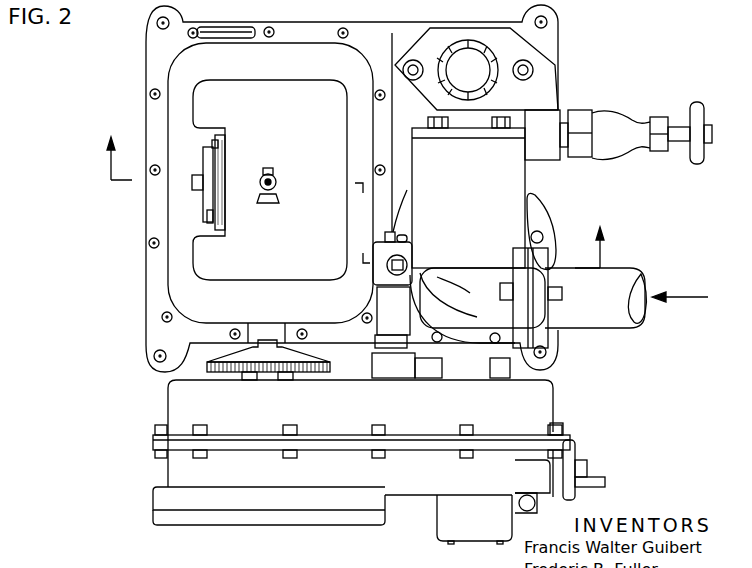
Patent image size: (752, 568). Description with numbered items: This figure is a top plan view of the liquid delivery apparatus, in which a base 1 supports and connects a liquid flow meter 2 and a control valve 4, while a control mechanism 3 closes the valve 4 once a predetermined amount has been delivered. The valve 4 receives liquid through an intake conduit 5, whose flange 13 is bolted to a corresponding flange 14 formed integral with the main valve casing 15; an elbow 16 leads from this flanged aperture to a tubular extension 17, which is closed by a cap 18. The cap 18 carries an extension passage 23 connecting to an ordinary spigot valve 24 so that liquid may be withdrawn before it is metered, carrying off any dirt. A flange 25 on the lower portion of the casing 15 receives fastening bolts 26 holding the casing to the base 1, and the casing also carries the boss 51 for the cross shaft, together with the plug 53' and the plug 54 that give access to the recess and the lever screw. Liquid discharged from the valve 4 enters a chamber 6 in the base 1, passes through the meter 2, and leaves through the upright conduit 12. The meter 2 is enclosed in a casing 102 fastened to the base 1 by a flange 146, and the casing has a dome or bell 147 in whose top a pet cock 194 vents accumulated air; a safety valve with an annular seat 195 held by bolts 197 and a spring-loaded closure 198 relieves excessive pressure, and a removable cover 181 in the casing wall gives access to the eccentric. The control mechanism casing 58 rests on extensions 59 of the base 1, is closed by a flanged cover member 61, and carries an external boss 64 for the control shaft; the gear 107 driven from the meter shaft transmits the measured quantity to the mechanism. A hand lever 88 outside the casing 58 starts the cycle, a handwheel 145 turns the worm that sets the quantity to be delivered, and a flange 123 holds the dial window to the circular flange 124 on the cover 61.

The base 1 is at (502, 213).
The liquid flow meter 2 is at (232, 183).
The control mechanism 3 is at (375, 437).
The control valve 4 is at (477, 208).
The intake conduit 5 is at (644, 268).
The chamber 6 is at (355, 204).
The upright conduit 12 is at (457, 62).
The flange 13 is at (543, 338).
The flange 14 is at (517, 262).
The main valve casing 15 is at (432, 287).
The elbow 16 is at (470, 290).
The tubular extension 17 is at (478, 168).
The cap 18 is at (412, 130).
The extension passage 23 is at (548, 127).
The spigot valve 24 is at (606, 114).
The flange 25 is at (543, 214).
The fastening bolts 26 is at (438, 342).
The boss 51 is at (383, 308).
The plug 53' is at (418, 224).
The plug 54 is at (390, 272).
The casing 58 is at (550, 405).
The extensions 59 is at (247, 375).
The flanged cover member 61 is at (408, 486).
The external boss 64 is at (398, 367).
The hand lever 88 is at (521, 504).
The casing 102 is at (170, 119).
The gear 107 is at (230, 355).
The flange 123 is at (163, 525).
The circular flange 124 is at (163, 500).
The handwheel 145 is at (578, 449).
The flange 146 is at (146, 87).
The dome or bell 147 is at (256, 82).
The removable cover 181 is at (226, 26).
The pet cock 194 is at (278, 182).
The annular seat 195 is at (220, 160).
The bolts 197 is at (212, 146).
The closure 198 is at (207, 210).